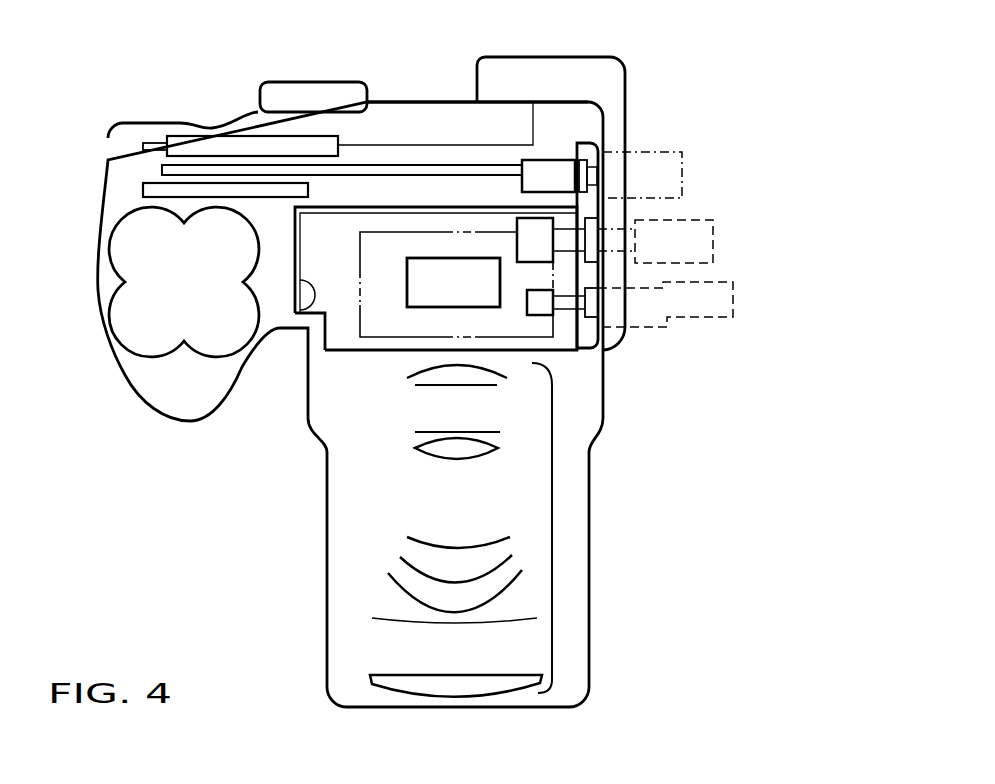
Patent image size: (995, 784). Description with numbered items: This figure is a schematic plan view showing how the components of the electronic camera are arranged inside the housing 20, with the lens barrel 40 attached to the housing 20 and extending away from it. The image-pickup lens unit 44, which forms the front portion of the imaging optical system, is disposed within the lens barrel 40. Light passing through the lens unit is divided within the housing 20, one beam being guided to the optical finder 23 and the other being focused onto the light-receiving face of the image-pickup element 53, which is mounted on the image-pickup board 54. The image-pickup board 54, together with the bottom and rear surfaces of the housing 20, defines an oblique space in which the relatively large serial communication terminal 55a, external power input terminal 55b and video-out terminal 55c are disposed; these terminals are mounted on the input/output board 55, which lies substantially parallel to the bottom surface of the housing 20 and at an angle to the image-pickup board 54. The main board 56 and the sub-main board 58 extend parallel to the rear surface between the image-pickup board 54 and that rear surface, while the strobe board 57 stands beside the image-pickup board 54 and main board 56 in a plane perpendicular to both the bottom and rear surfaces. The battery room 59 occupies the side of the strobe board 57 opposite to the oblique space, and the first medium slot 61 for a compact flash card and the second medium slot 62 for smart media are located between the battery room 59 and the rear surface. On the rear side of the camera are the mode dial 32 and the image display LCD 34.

The housing 20 is at (163, 118).
The optical finder 23 is at (578, 73).
The mode dial 32 is at (327, 92).
The image display LCD 34 is at (437, 122).
The lens barrel 40 is at (593, 577).
The image-pickup lens unit 44 is at (553, 525).
The image-pickup element 53 is at (428, 295).
The image-pickup board 54 is at (375, 340).
The input/output board 55 is at (558, 338).
The serial communication terminal 55a is at (562, 308).
The external power input terminal 55b is at (558, 237).
The video-out terminal 55c is at (550, 175).
The main board 56 is at (392, 207).
The strobe board 57 is at (313, 316).
The sub-main board 58 is at (490, 163).
The battery room 59 is at (152, 342).
The first medium slot 61 is at (142, 182).
The second medium slot 62 is at (230, 143).